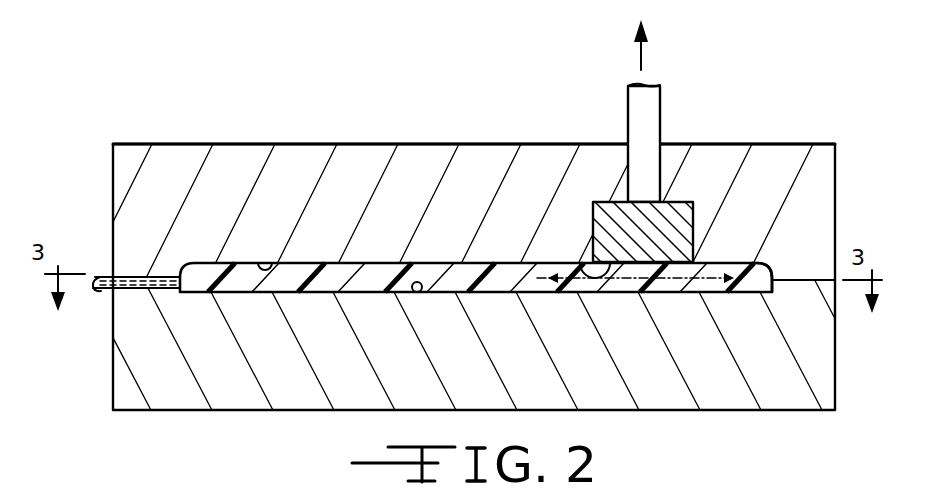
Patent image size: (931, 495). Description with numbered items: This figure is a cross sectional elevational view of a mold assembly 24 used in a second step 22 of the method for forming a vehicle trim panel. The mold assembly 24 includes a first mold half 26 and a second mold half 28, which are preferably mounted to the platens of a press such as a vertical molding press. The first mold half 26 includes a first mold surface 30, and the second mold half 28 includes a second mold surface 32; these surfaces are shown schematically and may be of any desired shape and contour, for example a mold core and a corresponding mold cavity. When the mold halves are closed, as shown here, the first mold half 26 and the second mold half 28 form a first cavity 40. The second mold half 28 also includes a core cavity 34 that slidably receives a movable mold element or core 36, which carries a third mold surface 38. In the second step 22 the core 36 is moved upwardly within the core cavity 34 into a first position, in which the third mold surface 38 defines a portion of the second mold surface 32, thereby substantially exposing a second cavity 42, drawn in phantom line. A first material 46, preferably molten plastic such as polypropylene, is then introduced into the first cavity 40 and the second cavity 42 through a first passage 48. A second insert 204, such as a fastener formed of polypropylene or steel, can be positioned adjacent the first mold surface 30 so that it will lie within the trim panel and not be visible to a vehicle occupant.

The second step 22 is at (150, 62).
The mold assembly 24 is at (332, 128).
The first mold half 26 is at (215, 393).
The second mold half 28 is at (153, 160).
The first mold surface 30 is at (413, 292).
The second mold surface 32 is at (272, 262).
The core cavity 34 is at (678, 236).
The movable core 36 is at (682, 202).
The third mold surface 38 is at (582, 273).
The first cavity 40 is at (485, 294).
The second cavity 42 is at (637, 295).
The first material 46 is at (750, 294).
The first passage 48 is at (100, 292).
The second insert 204 is at (272, 349).